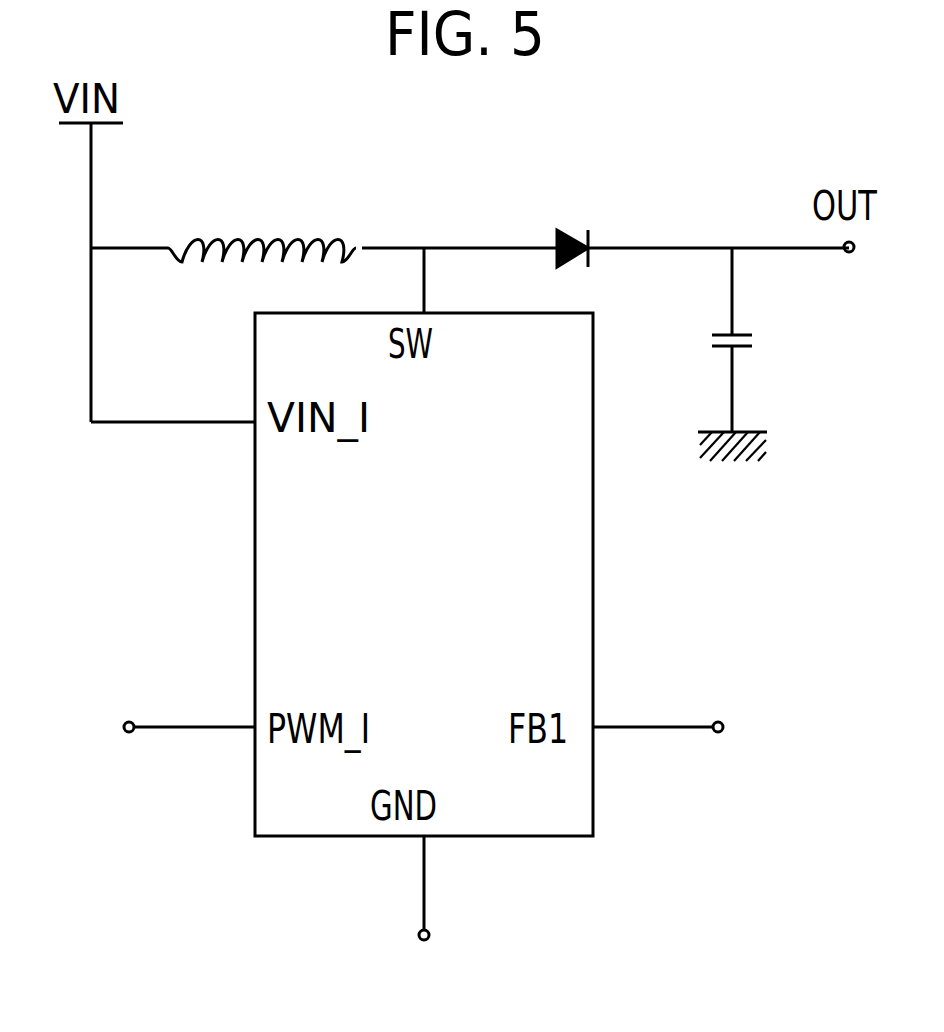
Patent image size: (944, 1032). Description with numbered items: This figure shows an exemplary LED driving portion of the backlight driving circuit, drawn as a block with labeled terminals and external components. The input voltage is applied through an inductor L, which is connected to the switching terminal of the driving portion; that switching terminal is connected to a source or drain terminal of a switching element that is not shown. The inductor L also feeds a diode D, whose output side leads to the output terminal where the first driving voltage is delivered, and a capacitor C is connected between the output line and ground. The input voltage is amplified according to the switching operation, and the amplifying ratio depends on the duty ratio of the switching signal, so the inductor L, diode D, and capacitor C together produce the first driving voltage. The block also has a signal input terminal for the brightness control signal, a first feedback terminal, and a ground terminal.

The inductor L is at (262, 222).
The diode D is at (573, 224).
The capacitor C is at (749, 340).